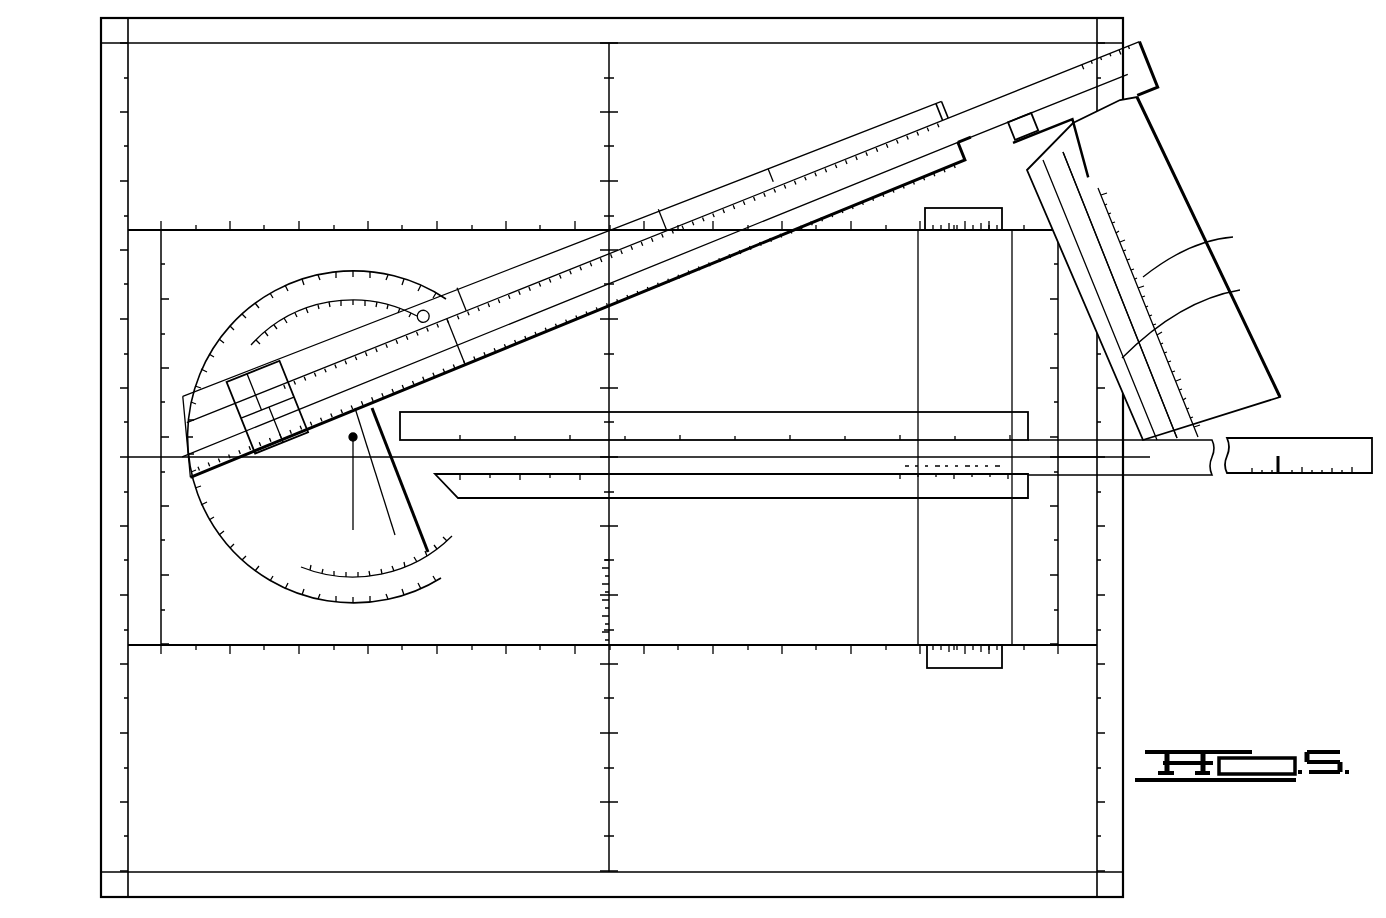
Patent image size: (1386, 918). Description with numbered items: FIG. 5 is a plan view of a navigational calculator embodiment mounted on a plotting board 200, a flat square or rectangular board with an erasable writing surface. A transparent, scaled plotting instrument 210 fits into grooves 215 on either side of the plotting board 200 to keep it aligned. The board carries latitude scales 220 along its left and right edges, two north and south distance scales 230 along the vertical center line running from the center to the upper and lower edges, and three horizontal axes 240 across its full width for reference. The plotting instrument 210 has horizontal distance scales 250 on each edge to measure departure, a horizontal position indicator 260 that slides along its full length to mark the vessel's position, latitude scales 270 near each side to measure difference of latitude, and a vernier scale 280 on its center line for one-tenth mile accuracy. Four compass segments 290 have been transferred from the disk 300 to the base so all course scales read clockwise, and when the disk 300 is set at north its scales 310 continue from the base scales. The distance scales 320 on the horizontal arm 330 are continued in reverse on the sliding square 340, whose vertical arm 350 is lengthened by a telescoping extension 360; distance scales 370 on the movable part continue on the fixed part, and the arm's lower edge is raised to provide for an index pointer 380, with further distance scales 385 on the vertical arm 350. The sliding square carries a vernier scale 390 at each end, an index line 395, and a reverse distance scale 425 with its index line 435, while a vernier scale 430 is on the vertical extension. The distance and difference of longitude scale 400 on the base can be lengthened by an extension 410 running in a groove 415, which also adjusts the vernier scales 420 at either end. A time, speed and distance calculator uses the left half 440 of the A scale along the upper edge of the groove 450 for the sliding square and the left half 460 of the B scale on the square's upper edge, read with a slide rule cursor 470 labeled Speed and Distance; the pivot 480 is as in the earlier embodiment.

The plotting board 200 is at (173, 803).
The plotting instrument 210 is at (788, 597).
The grooves 215 is at (128, 186).
The latitude scales 220 is at (128, 126).
The north and south distance scales 230 is at (609, 753).
The horizontal axes 240 is at (405, 43).
The horizontal distance scales 250 is at (862, 232).
The horizontal position indicator 260 is at (953, 671).
The latitude scales 270 is at (162, 547).
The vernier scale 280 is at (604, 583).
The compass segments 290 is at (253, 337).
The disk 300 is at (280, 536).
The scales 310 is at (287, 597).
The distance scales 320 is at (692, 256).
The horizontal arm 330 is at (818, 164).
The sliding square 340 is at (955, 121).
The vertical arm 350 is at (1168, 228).
The extension 360 is at (1260, 356).
The distance scales 370 is at (1240, 290).
The index pointer 380 is at (1175, 150).
The distance scales 385 is at (1233, 237).
The vernier scale 390 is at (1150, 72).
The index line 395 is at (1023, 118).
The distance and difference of longitude scale 400 is at (778, 412).
The extension 410 is at (1277, 478).
The groove 415 is at (726, 475).
The vernier scales 420 is at (986, 475).
The reverse distance scale 425 is at (870, 148).
The vernier scale 430 is at (1075, 195).
The index line 435 is at (962, 148).
The left half of the A scale 440 is at (462, 300).
The groove 450 is at (455, 341).
The left half of the B scale 460 is at (665, 226).
The slide rule cursor 470 is at (240, 426).
The pivot 480 is at (350, 442).